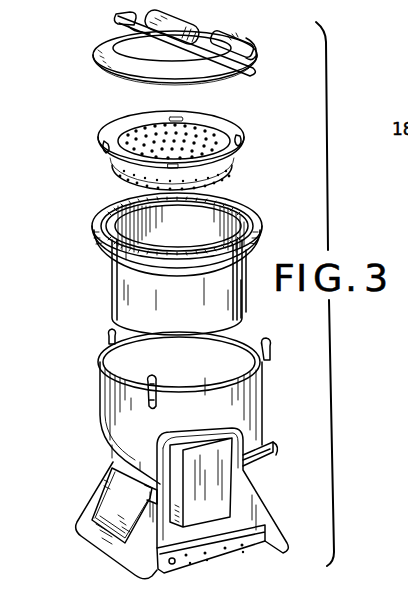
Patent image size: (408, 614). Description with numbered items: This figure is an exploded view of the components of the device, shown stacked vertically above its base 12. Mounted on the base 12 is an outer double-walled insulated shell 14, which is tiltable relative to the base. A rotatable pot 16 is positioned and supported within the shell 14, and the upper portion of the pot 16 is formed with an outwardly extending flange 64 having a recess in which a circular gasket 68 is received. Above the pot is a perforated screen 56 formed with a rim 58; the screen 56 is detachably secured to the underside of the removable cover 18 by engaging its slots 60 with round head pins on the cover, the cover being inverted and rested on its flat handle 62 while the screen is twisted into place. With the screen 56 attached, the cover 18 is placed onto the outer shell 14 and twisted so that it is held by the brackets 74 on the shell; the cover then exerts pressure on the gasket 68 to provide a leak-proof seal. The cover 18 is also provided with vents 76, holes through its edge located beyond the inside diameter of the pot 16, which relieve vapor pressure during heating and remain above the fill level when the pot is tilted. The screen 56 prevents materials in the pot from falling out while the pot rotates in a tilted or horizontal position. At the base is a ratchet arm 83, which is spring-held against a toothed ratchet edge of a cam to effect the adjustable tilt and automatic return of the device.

The base 12 is at (105, 547).
The outer double-walled insulated shell 14 is at (104, 405).
The rotatable pot 16 is at (117, 283).
The removable cover 18 is at (118, 62).
The perforated screen 56 is at (122, 175).
The rim 58 is at (237, 130).
The slots 60 is at (106, 146).
The flat handle 62 is at (128, 32).
The outwardly extending flange 64 is at (100, 243).
The circular gasket 68 is at (248, 225).
The brackets 74 is at (150, 384).
The vents 76 is at (200, 31).
The ratchet arm 83 is at (276, 450).